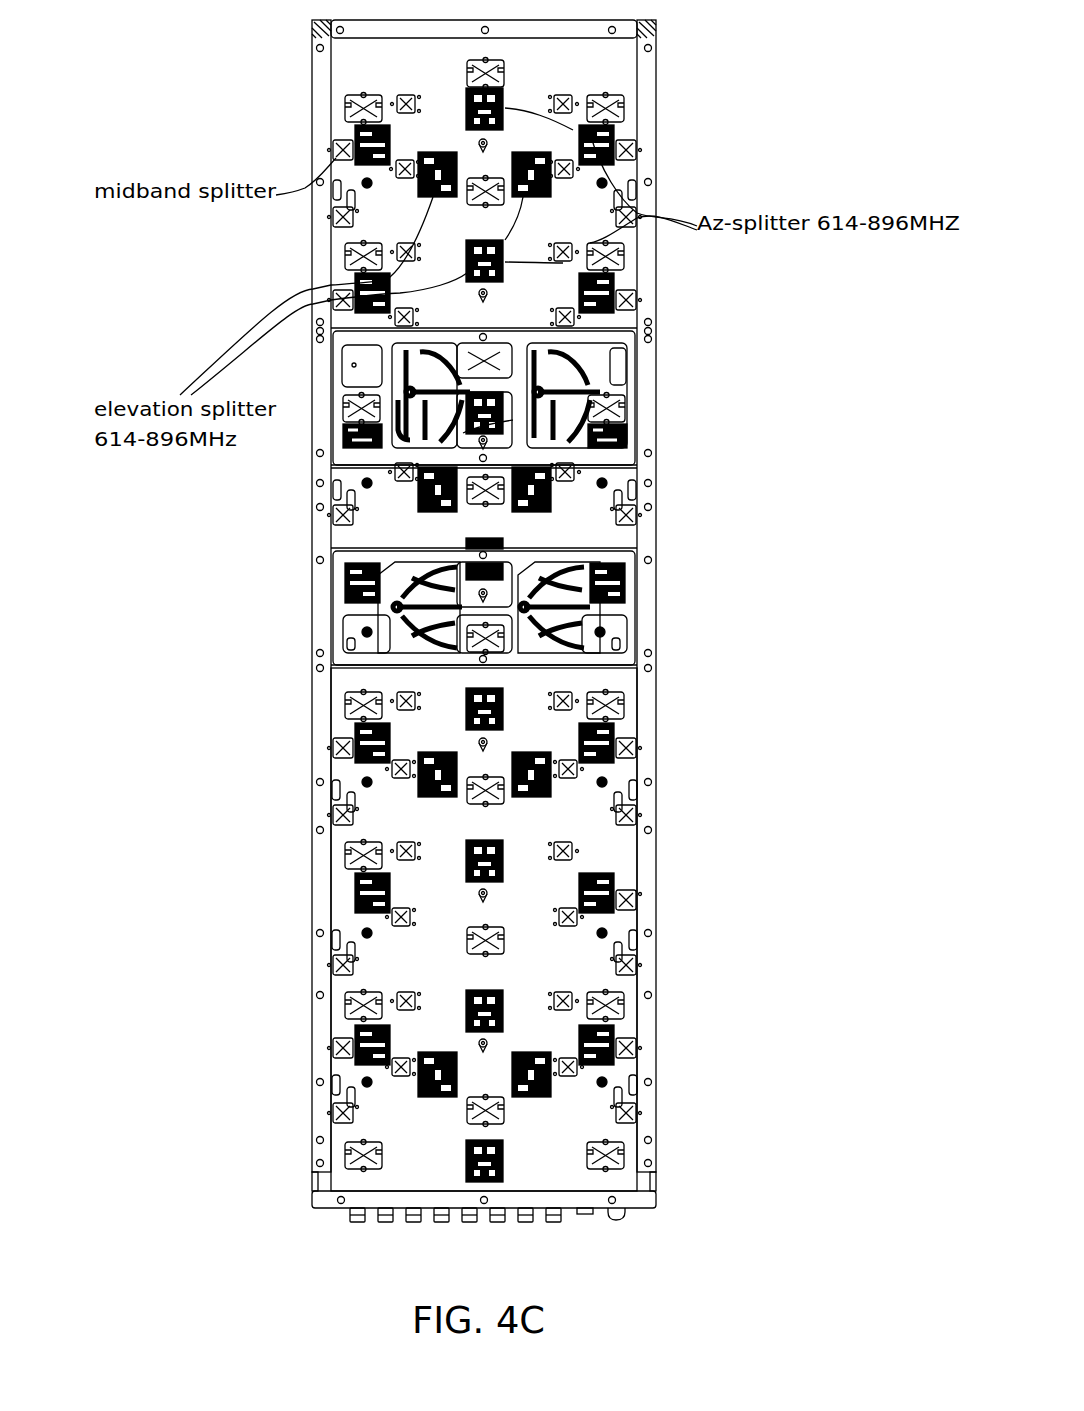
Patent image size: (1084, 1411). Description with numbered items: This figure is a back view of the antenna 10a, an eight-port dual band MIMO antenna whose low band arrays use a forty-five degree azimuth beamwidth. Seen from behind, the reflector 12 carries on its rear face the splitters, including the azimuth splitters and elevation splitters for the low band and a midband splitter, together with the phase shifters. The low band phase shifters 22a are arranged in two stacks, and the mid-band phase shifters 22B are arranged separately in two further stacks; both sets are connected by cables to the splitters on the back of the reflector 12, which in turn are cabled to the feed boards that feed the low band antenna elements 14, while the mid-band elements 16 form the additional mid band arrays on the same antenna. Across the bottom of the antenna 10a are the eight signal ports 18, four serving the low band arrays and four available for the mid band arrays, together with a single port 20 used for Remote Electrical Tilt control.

The antenna 10a is at (153, 57).
The reflector 12 is at (407, 970).
The antenna elements 14 is at (345, 850).
The mid-band elements 16 is at (620, 889).
The signal ports 18 is at (388, 1223).
The port 20 is at (635, 1213).
The phase shifters 22a is at (573, 430).
The mid-band phase shifters 22B is at (420, 650).